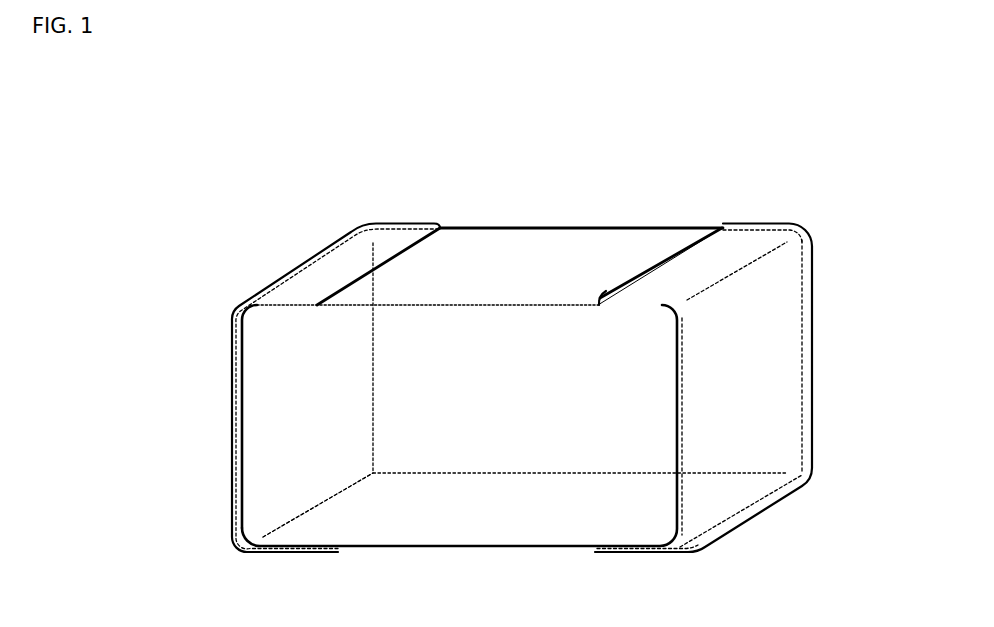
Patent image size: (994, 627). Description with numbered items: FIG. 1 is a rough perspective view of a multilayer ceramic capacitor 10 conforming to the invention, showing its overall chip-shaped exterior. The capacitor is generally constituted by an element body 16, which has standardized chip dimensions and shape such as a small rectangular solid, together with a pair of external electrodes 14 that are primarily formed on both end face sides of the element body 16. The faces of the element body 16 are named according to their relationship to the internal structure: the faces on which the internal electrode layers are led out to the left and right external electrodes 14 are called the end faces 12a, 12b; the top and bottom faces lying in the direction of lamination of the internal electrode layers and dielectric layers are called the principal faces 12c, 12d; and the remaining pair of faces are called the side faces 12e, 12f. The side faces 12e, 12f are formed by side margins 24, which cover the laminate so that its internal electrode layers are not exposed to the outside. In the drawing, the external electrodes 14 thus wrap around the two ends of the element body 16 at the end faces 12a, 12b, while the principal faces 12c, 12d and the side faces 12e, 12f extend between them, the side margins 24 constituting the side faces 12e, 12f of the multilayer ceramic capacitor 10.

The multilayer ceramic capacitor 10 is at (524, 363).
The end face 12a is at (275, 405).
The end face 12b is at (763, 370).
The principal face 12c is at (507, 253).
The principal face 12d is at (537, 515).
The side face 12e is at (405, 508).
The side face 12f is at (577, 258).
The external electrode 14 is at (808, 418).
The element body 16 is at (467, 258).
The side margin 24 is at (400, 300).